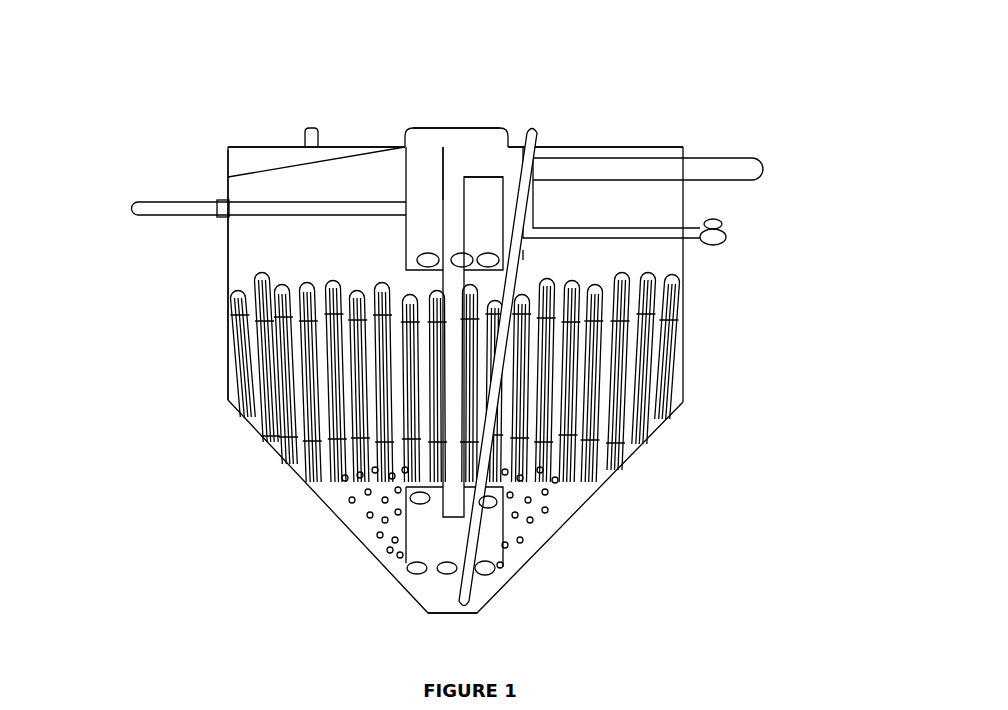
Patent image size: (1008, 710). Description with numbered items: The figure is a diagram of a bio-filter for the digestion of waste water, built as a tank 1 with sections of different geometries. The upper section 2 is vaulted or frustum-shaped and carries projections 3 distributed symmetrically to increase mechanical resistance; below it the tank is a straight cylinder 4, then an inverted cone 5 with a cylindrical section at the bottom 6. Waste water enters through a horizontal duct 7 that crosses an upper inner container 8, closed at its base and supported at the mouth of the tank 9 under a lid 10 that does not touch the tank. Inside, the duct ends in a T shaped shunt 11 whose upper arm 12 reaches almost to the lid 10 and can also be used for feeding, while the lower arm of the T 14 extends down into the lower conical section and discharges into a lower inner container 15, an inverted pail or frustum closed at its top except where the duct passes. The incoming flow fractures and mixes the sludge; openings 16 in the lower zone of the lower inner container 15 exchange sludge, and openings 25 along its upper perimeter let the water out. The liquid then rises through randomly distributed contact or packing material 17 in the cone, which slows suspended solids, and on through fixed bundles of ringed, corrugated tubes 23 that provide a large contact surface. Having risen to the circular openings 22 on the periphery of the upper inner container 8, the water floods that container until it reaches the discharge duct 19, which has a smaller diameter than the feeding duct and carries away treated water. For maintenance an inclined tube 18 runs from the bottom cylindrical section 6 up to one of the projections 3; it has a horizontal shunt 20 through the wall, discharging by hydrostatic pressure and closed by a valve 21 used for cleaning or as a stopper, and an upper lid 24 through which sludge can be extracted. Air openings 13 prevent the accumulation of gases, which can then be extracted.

The tank 1 is at (688, 208).
The upper section 2 is at (286, 163).
The projections 3 is at (675, 146).
The straight cylinder 4 is at (224, 353).
The inverted cone 5 is at (626, 471).
The cylindrical section at the bottom 6 is at (486, 612).
The horizontal duct 7 is at (763, 170).
The upper inner container 8 is at (419, 184).
The mouth of the tank 9 is at (477, 137).
The lid 10 is at (448, 127).
The T shaped shunt 11 is at (469, 165).
The upper arm 12 is at (442, 146).
The air openings 13 is at (308, 126).
The lower arm of the T 14 is at (447, 237).
The lower inner container 15 is at (434, 555).
The openings 16 is at (492, 575).
The contact or packing material 17 is at (534, 510).
The inclined tube 18 is at (528, 256).
The discharge duct 19 is at (138, 200).
The horizontal shunt 20 is at (604, 239).
The valve 21 is at (733, 237).
The circular openings 22 is at (492, 267).
The tubes 23 is at (658, 376).
The upper lid 24 is at (535, 122).
The openings 25 is at (407, 497).